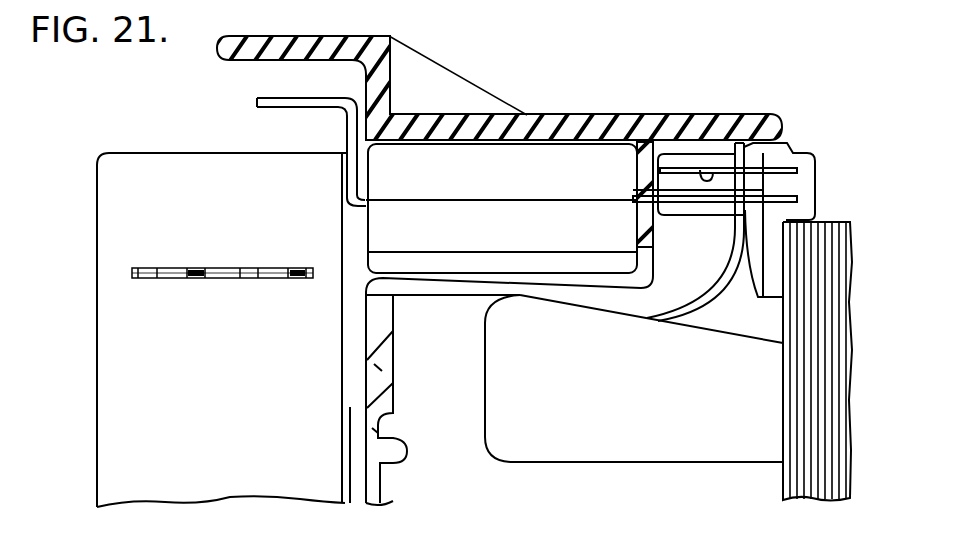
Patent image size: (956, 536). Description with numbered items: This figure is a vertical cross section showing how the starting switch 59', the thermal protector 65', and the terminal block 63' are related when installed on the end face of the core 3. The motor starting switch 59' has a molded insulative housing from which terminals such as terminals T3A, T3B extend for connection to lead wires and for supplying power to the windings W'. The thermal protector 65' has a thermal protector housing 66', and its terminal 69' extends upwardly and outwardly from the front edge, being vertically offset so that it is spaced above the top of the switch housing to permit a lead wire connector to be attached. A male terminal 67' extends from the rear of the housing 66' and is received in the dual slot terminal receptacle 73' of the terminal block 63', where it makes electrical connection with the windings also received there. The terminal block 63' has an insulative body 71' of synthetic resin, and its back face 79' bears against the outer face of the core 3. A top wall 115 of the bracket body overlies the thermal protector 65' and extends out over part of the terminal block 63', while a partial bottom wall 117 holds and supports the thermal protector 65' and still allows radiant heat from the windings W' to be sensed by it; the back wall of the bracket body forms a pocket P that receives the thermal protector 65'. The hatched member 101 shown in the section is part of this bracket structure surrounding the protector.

The motor starting switch 59' is at (187, 330).
The terminal T3A is at (168, 268).
The terminal T3B is at (268, 279).
The terminal 69' is at (252, 142).
The hatched L-shaped member 101 is at (400, 82).
The top wall 115 is at (433, 113).
The thermal protector 65' is at (502, 161).
The thermal protector housing 66' is at (501, 124).
The male terminal 67' is at (555, 277).
The terminal block 63' is at (755, 152).
The insulative body 71' is at (756, 180).
The dual slot terminal receptacle 73' is at (738, 186).
The back face 79' is at (820, 241).
The core 3 is at (827, 272).
The partial bottom wall 117 is at (403, 296).
The pocket P is at (520, 262).
The windings W' is at (634, 406).